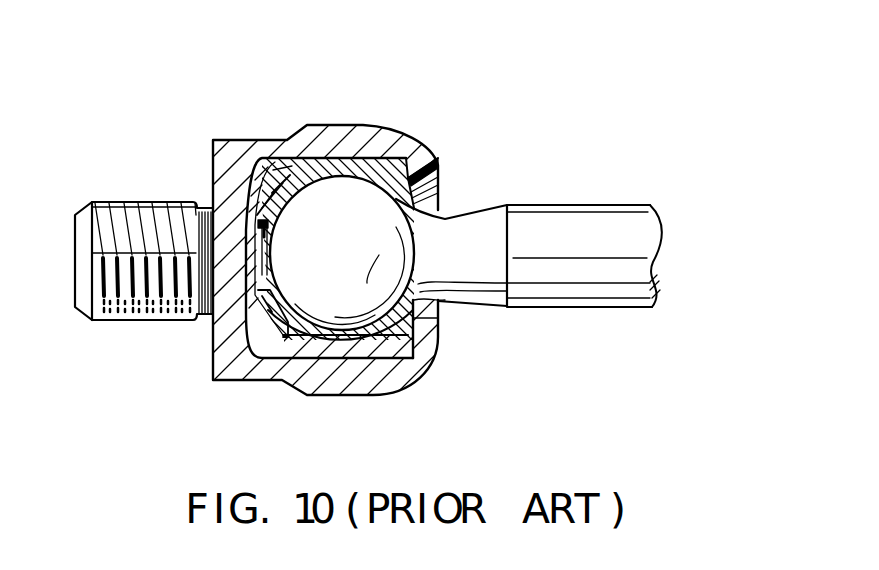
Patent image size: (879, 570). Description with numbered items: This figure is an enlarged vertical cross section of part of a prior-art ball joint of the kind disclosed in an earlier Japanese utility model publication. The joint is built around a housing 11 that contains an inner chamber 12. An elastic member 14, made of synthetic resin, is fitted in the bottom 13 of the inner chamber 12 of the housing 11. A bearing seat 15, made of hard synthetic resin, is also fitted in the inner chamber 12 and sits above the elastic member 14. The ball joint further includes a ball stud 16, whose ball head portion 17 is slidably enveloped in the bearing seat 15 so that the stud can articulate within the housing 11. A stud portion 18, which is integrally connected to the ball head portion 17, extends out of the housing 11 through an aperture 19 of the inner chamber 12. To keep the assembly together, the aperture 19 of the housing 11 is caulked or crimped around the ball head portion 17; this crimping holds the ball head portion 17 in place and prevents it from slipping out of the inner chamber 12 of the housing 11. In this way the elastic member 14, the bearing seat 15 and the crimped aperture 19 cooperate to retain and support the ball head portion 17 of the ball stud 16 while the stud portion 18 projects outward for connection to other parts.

The housing 11 is at (337, 135).
The inner chamber 12 is at (395, 165).
The bottom of inner chamber 13 is at (233, 320).
The elastic member 14 is at (272, 348).
The bearing seat 15 is at (329, 347).
The ball stud 16 is at (512, 230).
The ball head portion 17 is at (372, 220).
The stud portion 18 is at (622, 247).
The aperture 19 is at (438, 332).